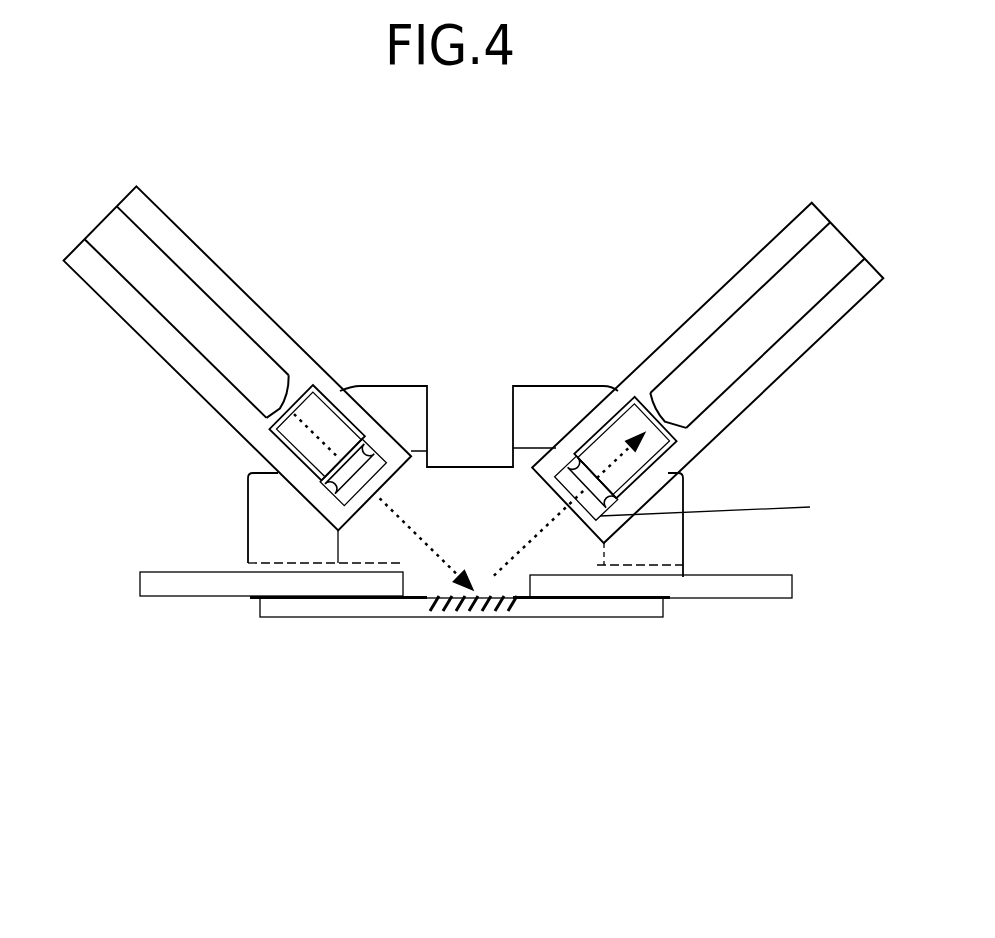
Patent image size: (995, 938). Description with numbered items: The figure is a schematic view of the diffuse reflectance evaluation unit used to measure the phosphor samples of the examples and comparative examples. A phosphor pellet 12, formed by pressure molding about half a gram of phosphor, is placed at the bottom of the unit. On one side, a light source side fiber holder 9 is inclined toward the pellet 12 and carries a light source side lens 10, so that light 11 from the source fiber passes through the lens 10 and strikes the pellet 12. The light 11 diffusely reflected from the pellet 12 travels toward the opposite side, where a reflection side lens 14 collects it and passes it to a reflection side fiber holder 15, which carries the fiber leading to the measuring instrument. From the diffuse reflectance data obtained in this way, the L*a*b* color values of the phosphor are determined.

The light source side fiber holder 9 is at (235, 298).
The light source side lens 10 is at (253, 473).
The light 11 is at (383, 505).
The pellet 12 is at (497, 617).
The reflection side lens 14 is at (582, 455).
The reflection side fiber holder 15 is at (753, 290).